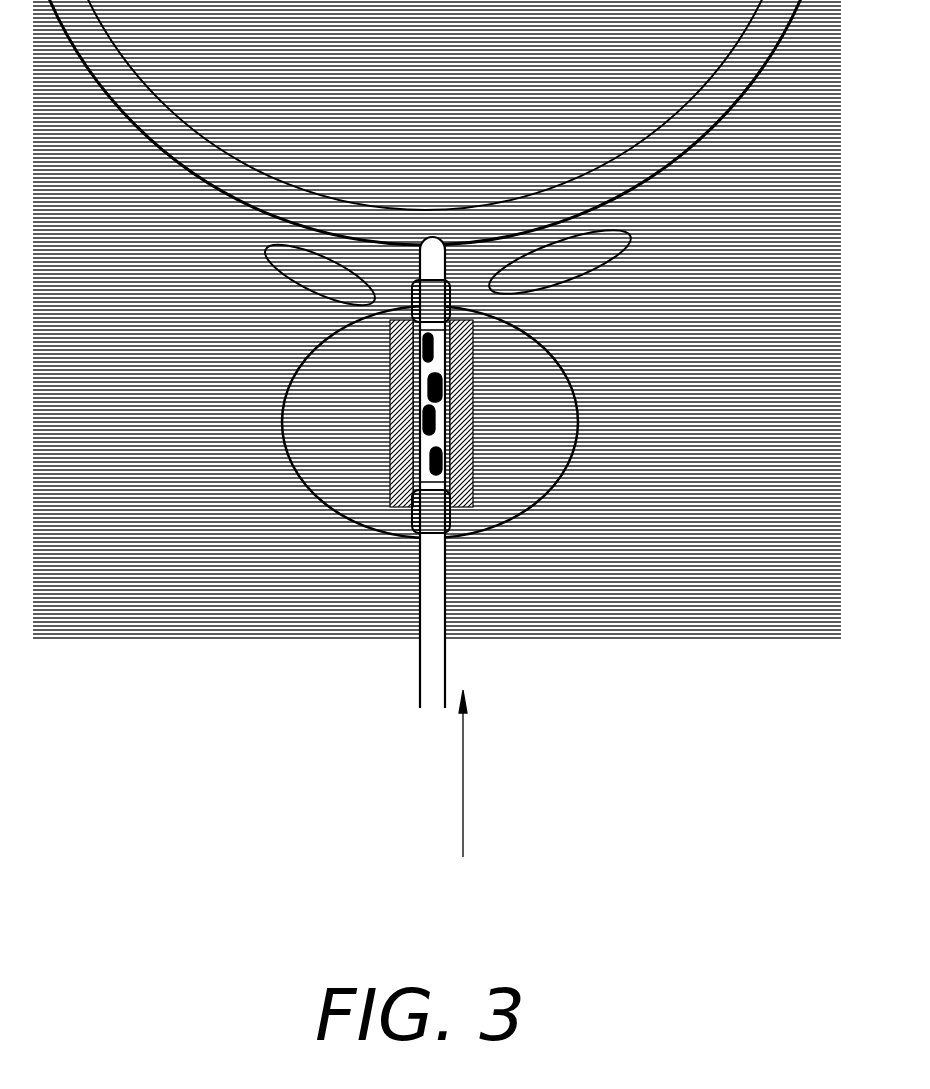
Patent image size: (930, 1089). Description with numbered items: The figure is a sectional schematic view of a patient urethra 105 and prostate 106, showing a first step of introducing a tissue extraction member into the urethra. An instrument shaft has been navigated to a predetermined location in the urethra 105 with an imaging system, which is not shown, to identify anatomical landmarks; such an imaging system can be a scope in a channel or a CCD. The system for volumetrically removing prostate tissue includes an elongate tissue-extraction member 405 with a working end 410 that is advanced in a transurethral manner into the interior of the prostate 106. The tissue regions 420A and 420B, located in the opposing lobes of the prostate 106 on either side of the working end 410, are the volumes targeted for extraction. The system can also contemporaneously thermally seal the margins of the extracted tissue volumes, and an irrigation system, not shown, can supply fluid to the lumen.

The prostate 106 is at (310, 320).
The urethra 105 is at (413, 377).
The tissue region 420A is at (395, 470).
The tissue region 420B is at (460, 487).
The working end 410 is at (440, 441).
The elongate tissue-extraction member 405 is at (440, 664).